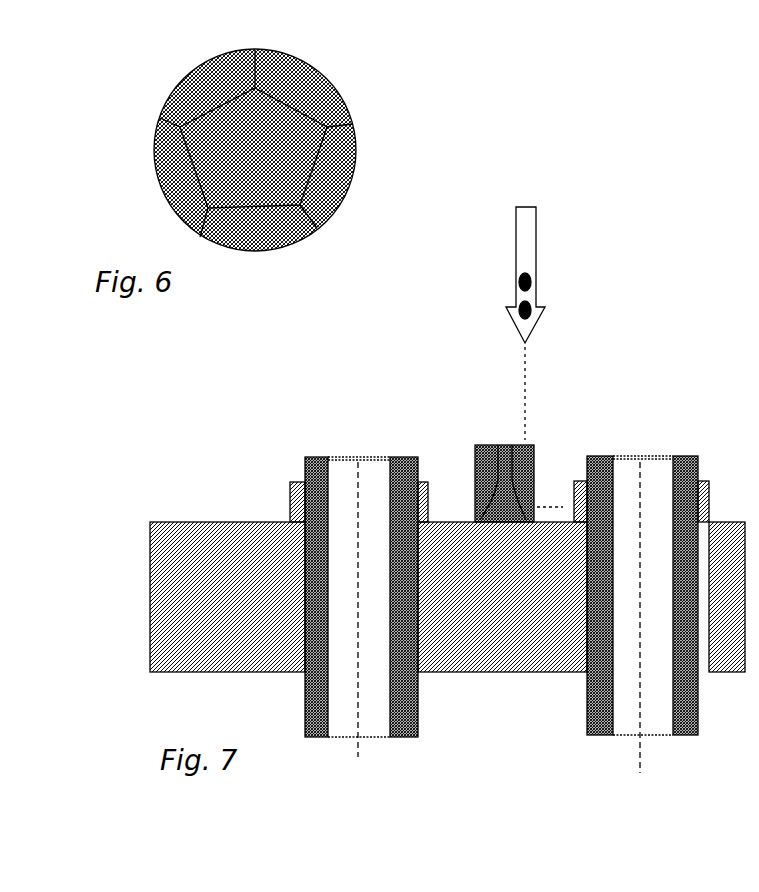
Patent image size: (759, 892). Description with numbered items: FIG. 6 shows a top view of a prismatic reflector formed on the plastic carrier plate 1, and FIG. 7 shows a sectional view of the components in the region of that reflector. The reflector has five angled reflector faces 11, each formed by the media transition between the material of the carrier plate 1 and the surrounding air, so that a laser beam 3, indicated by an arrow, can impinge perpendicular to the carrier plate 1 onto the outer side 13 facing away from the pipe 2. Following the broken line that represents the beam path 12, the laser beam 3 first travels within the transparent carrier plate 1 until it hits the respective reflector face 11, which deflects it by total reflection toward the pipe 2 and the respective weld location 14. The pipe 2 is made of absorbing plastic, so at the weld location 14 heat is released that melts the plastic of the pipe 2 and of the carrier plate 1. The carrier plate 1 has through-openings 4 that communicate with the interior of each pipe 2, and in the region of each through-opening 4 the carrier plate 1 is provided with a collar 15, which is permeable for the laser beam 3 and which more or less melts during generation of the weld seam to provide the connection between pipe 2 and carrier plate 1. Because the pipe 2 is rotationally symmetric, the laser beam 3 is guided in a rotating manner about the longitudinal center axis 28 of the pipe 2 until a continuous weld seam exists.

In FIG. 7, the carrier plate 1 is at (173, 518).
In FIG. 7, the pipe 2 is at (686, 456).
In FIG. 7, the laser beam 3 is at (538, 232).
In FIG. 7, the through-opening 4 is at (330, 552).
In FIG. 6, the reflector face 11 is at (198, 66).
In FIG. 7, the beam path 12 is at (530, 392).
In FIG. 6, the outer side 13 is at (358, 120).
In FIG. 7, the outer side 13 is at (536, 460).
In FIG. 7, the weld location 14 is at (616, 494).
In FIG. 7, the collar 15 is at (289, 498).
In FIG. 7, the longitudinal center axis 28 is at (360, 716).